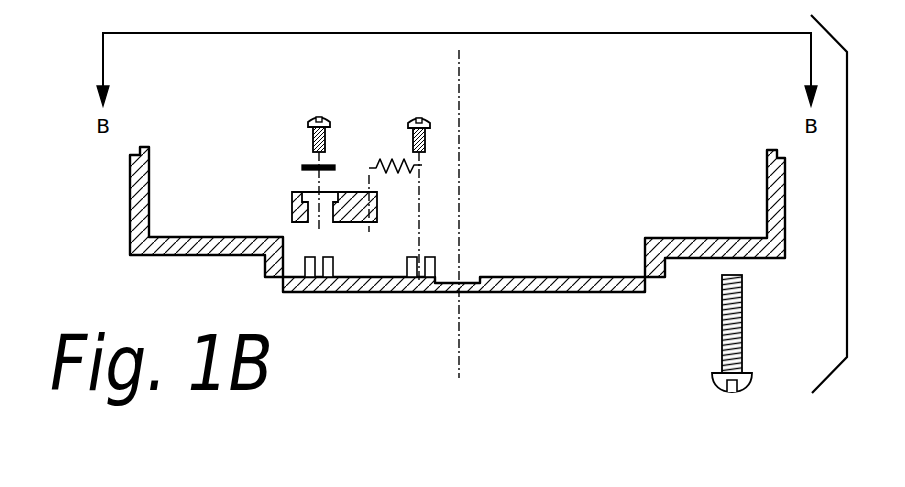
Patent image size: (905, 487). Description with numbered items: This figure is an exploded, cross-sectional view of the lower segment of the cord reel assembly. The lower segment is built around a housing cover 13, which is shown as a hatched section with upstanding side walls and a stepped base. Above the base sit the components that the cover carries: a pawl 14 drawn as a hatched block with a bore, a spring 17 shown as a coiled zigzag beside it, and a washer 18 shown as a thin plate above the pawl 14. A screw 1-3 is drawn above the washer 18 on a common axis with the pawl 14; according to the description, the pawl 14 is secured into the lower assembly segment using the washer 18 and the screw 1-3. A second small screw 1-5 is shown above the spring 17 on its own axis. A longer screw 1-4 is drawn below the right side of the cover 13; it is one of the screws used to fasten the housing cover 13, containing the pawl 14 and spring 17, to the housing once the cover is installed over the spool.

The housing cover 13 is at (130, 215).
The pawl 14 is at (292, 205).
The spring 17 is at (405, 172).
The washer 18 is at (302, 166).
The screw 1-3 is at (315, 118).
The screw 1-4 is at (722, 318).
The screw 1-5 is at (430, 125).